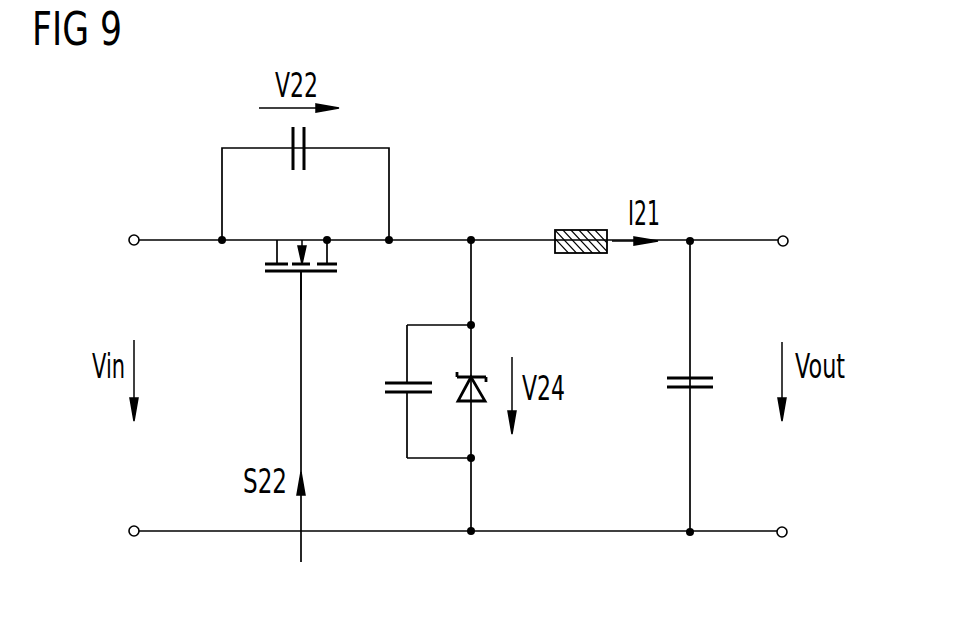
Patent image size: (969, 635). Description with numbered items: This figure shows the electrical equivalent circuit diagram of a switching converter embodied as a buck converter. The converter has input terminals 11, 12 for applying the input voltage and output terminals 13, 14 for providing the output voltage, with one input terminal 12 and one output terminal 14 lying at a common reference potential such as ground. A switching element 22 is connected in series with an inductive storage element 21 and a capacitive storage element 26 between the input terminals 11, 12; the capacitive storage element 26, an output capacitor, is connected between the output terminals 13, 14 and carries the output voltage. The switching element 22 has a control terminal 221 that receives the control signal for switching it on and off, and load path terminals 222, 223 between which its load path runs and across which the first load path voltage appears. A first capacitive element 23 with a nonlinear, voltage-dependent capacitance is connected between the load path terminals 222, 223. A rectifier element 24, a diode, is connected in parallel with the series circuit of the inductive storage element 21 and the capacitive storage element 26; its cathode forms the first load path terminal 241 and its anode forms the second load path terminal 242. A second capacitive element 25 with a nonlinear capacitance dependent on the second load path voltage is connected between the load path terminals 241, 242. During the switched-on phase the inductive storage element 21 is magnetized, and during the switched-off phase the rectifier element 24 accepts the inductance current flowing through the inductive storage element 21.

The input terminal 11 is at (133, 235).
The input terminal 12 is at (133, 537).
The output terminal 13 is at (782, 236).
The output terminal 14 is at (782, 538).
The inductive storage element 21 is at (579, 229).
The switching element 22 is at (277, 274).
The first capacitive element 23 is at (292, 133).
The rectifier element 24 is at (479, 373).
The second capacitive element 25 is at (395, 380).
The capacitive storage element 26 is at (677, 377).
The control terminal 221 is at (303, 274).
The load path terminal 222 is at (252, 237).
The load path terminal 223 is at (352, 237).
The first load path terminal 241 is at (468, 323).
The second load path terminal 242 is at (468, 462).